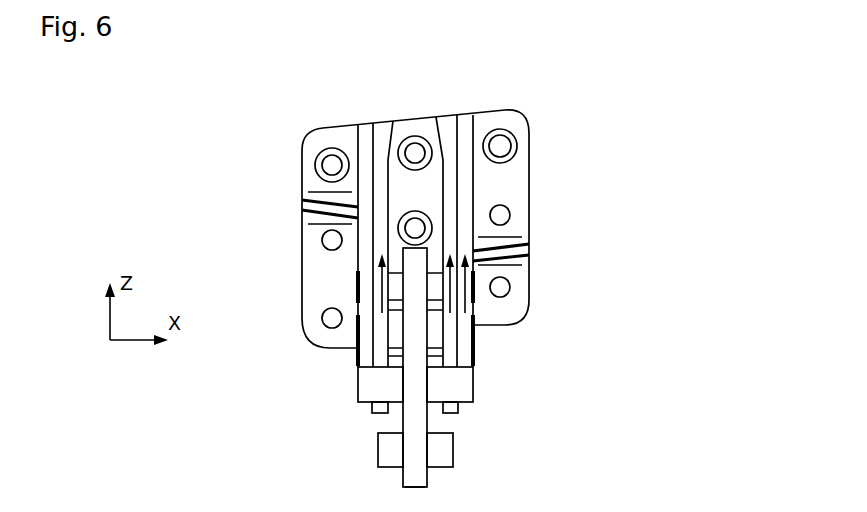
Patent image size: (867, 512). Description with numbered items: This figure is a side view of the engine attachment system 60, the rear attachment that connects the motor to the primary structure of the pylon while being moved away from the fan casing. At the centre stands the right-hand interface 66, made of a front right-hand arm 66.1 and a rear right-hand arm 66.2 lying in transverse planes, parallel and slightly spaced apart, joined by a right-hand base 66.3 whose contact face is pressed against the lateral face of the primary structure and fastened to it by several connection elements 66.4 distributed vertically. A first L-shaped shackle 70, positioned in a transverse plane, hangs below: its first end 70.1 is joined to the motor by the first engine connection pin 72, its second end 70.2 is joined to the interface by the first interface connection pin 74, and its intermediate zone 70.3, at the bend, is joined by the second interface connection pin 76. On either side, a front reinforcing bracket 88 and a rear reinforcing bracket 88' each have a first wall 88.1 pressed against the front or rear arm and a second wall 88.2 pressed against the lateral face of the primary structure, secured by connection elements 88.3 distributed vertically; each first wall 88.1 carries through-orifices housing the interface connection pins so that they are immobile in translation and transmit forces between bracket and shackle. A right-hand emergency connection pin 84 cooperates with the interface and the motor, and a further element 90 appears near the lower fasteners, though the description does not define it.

The engine attachment system 60 is at (636, 143).
The right-hand interface 66 is at (397, 114).
The front right-hand arm 66.1 is at (382, 183).
The rear right-hand arm 66.2 is at (447, 183).
The right-hand base 66.3 is at (426, 124).
The connection element 66.4 is at (415, 150).
The first L-shaped shackle 70 is at (432, 398).
The first end of the first shackle 70.1 is at (415, 476).
The second end of the first shackle 70.2 is at (476, 255).
The intermediate zone of the first shackle 70.3 is at (413, 338).
The first engine connection pin 72 is at (460, 456).
The first interface connection pin 74 is at (492, 283).
The second interface connection pin 76 is at (486, 352).
The right-hand emergency connection pin 84 is at (350, 391).
The reinforcing bracket 88 is at (367, 238).
The rear reinforcing bracket 88' is at (561, 220).
The first wall of the reinforcing bracket 88.1 is at (465, 137).
The second wall of the reinforcing bracket 88.2 is at (503, 193).
The connection element 88.3 is at (500, 146).
The washer 90 is at (380, 413).